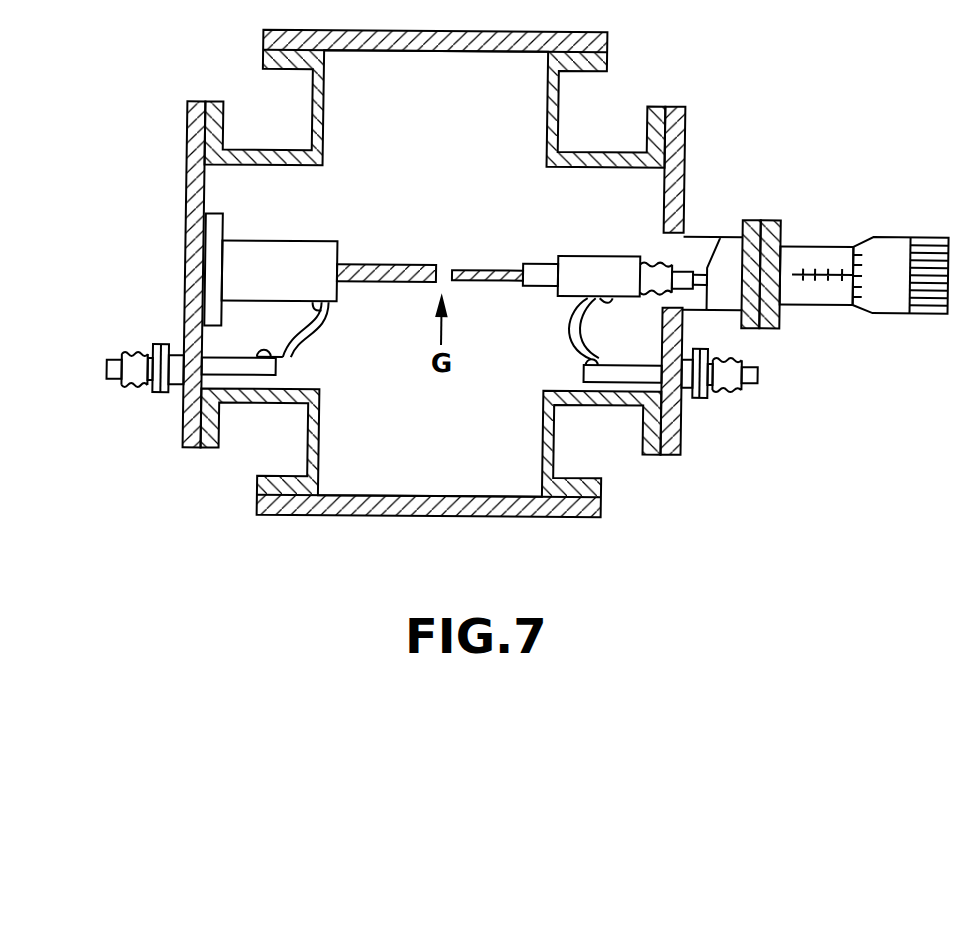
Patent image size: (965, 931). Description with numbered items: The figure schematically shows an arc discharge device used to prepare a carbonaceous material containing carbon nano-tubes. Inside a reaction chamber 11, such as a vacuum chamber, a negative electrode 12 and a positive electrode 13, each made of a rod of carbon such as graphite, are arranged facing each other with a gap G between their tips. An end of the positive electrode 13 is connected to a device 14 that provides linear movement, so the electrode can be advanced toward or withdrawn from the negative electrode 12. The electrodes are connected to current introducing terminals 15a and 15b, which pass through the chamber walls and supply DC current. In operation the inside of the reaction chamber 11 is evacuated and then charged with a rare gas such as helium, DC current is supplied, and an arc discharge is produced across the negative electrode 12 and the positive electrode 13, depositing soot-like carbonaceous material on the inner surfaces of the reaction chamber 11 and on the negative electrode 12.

The reaction chamber 11 is at (220, 190).
The negative electrode 12 is at (363, 265).
The positive electrode 13 is at (472, 269).
The device that provides linear movement 14 is at (920, 313).
The current introducing terminal 15a is at (759, 373).
The current introducing terminal 15b is at (108, 372).